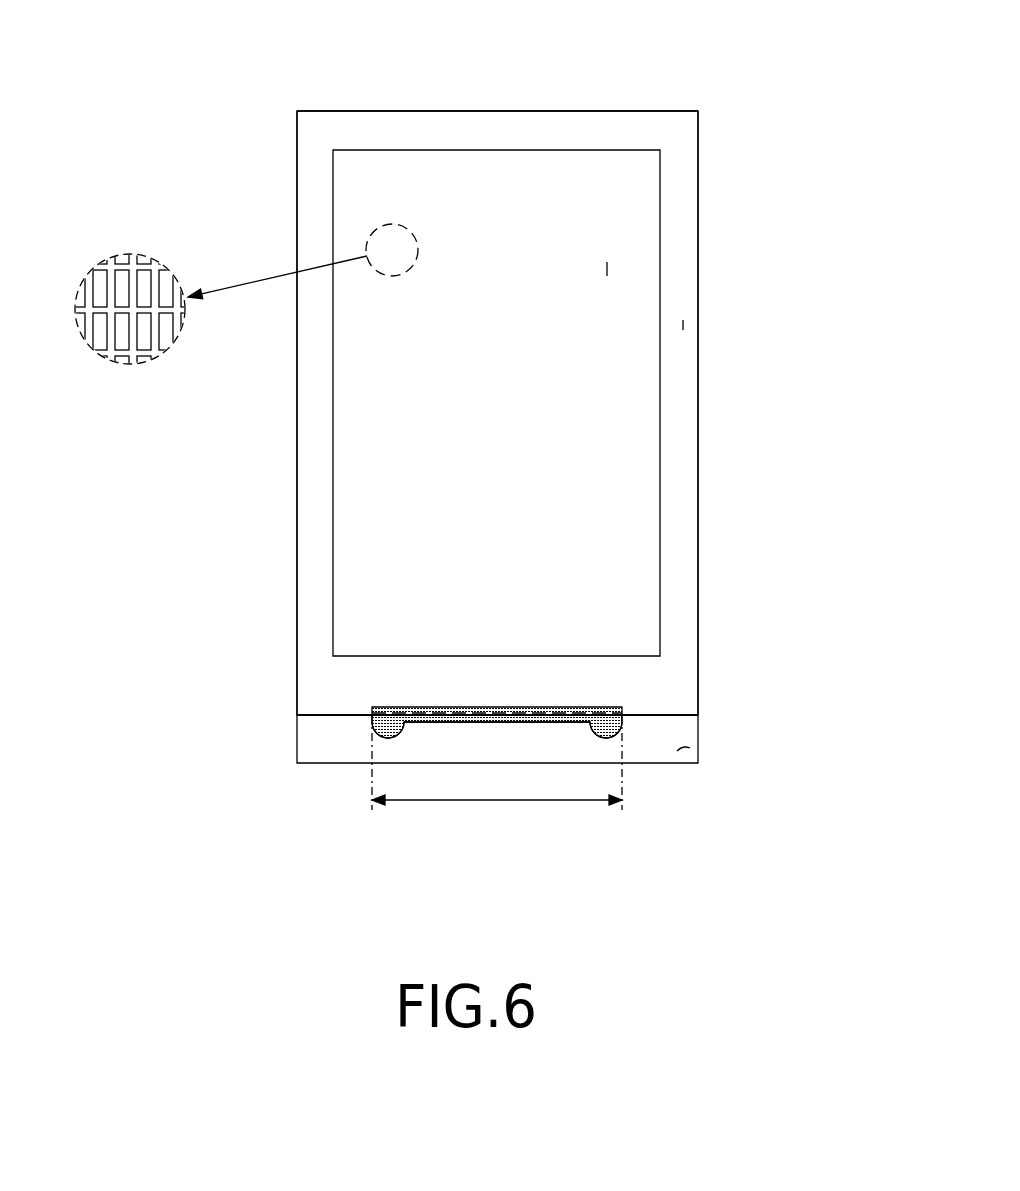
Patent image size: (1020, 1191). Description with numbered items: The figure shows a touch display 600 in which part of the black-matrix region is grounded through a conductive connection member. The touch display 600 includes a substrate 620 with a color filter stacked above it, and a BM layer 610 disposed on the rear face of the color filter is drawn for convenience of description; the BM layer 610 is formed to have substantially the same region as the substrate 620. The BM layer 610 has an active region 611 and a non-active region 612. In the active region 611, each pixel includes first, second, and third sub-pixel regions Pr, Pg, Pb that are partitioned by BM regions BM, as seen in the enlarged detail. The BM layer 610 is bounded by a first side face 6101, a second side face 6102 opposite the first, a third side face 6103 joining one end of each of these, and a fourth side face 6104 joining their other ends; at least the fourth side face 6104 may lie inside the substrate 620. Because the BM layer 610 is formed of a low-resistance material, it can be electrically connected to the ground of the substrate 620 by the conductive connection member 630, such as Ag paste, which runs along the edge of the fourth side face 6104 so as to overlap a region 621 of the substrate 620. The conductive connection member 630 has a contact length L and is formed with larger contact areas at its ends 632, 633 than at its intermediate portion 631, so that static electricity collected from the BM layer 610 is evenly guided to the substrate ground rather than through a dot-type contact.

The touch display 600 is at (435, 458).
The BM layer 610 is at (496, 370).
The active region 611 is at (607, 268).
The non-active region 612 is at (683, 325).
The first side face 6101 is at (297, 451).
The second side face 6102 is at (699, 392).
The third side face 6103 is at (492, 111).
The fourth side face 6104 is at (673, 715).
The substrate 620 is at (502, 807).
The region of the substrate 621 is at (683, 752).
The conductive connection member 630 is at (502, 783).
The intermediate portion 631 is at (546, 727).
The end 632 is at (373, 727).
The end 633 is at (623, 727).
The first sub-pixel region Pr is at (89, 310).
The second sub-pixel region Pg is at (122, 310).
The third sub-pixel region Pb is at (158, 267).
The BM region BM is at (139, 300).
The length L is at (497, 762).